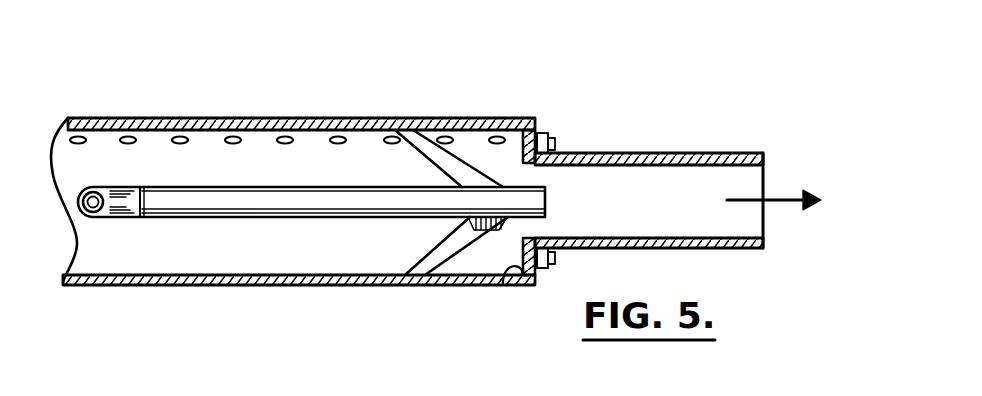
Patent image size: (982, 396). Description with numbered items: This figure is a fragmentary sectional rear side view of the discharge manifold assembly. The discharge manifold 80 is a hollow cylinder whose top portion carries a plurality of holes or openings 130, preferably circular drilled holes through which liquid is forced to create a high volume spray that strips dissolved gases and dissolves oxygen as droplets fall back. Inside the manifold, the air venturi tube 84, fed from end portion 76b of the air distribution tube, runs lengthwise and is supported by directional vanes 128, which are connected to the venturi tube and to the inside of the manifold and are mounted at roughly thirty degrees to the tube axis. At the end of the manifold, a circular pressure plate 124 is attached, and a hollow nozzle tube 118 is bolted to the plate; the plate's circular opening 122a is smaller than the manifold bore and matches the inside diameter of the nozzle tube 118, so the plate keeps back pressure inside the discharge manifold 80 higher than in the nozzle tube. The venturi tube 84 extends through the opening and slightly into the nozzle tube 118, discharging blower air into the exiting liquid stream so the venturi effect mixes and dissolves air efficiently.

The discharge manifold 80 is at (289, 108).
The holes or openings 130 is at (120, 133).
The air venturi tube 84 is at (303, 218).
The end portion of air distribution tube 76b is at (128, 217).
The directional vanes 128 is at (440, 174).
The hollow nozzle tube 118 is at (622, 153).
The circular opening 122a is at (523, 240).
The circular pressure plate 124 is at (503, 283).